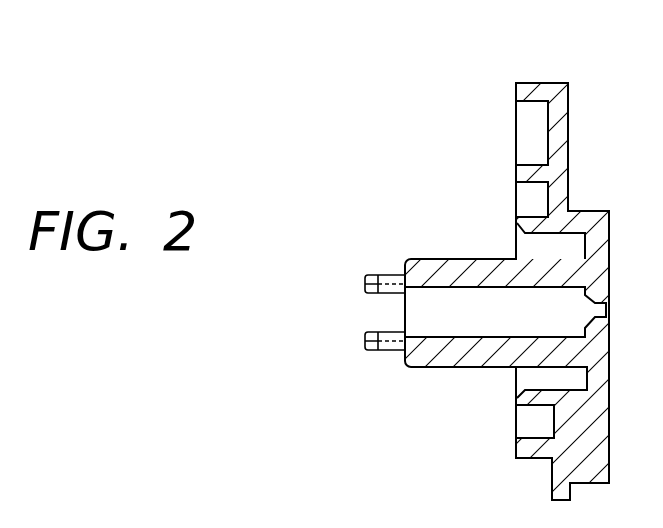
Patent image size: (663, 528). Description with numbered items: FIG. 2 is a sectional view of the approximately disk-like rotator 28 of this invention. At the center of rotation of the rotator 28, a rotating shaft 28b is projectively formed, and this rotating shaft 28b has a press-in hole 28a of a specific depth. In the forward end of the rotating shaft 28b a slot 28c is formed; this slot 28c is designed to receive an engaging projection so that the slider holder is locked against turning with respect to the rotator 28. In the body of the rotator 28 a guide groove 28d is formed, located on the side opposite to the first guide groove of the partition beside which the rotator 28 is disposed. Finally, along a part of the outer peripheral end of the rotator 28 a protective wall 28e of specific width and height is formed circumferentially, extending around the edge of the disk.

The rotator 28 is at (331, 260).
The press-in hole 28a is at (443, 318).
The rotating shaft 28b is at (467, 360).
The slot 28c is at (375, 307).
The guide groove 28d is at (522, 201).
The protective wall 28e is at (535, 88).